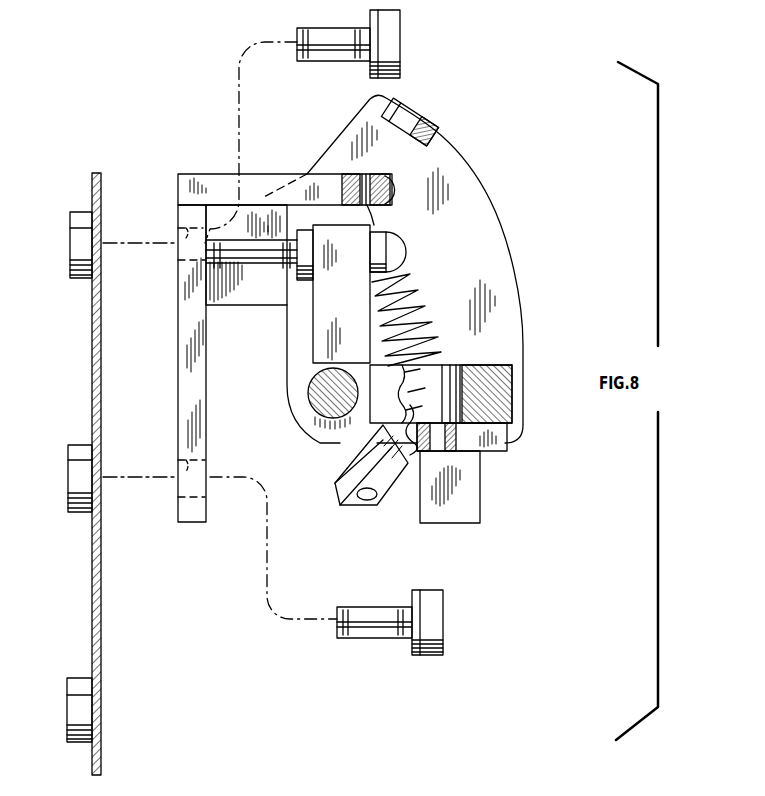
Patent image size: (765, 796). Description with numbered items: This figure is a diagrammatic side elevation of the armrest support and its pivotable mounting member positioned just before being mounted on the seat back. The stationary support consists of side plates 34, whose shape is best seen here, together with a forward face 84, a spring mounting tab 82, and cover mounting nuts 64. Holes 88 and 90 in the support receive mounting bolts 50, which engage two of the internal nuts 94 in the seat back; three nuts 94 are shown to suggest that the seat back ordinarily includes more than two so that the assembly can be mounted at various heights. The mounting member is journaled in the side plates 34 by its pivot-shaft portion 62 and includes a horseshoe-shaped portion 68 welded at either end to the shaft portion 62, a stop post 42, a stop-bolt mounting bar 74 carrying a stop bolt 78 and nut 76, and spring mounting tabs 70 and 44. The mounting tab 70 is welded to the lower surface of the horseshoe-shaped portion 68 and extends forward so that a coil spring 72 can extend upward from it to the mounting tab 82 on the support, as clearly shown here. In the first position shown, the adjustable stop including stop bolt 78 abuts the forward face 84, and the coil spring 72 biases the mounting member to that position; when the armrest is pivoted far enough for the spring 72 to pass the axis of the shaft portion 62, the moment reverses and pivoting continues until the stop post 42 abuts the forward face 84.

The side plates 34 is at (487, 210).
The stop post 42 is at (473, 507).
The spring mounting tab 44 is at (348, 482).
The mounting bolts 50 is at (398, 48).
The pivot-shaft portion 62 is at (300, 399).
The cover mounting nuts 64 is at (410, 118).
The horseshoe-shaped portion 68 is at (514, 402).
The mounting tab 70 is at (497, 451).
The coil spring 72 is at (422, 340).
The stop-bolt mounting bar 74 is at (351, 302).
The nut 76 is at (291, 297).
The stop bolt 78 is at (257, 262).
The spring mounting tab 82 is at (300, 183).
The forward face 84 is at (186, 346).
The hole 88 is at (176, 241).
The hole 90 is at (178, 472).
The internal nuts 94 is at (75, 215).